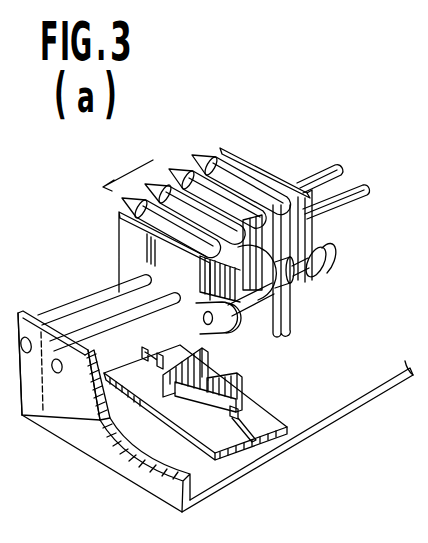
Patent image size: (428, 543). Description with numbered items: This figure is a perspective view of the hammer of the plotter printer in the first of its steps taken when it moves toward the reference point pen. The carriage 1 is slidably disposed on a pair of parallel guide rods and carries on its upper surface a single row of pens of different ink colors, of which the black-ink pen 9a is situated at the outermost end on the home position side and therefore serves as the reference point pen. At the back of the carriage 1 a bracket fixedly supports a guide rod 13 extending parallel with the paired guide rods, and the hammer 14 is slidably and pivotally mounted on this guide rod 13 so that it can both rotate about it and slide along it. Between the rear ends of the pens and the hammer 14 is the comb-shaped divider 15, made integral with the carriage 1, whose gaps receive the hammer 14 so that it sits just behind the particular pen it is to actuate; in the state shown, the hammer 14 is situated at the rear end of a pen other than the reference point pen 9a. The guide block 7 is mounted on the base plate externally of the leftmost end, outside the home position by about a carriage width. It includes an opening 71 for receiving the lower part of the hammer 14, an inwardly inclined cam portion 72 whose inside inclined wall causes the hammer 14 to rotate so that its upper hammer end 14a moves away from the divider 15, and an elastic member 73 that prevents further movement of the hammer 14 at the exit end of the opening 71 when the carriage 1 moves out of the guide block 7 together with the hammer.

The carriage 1 is at (104, 265).
The guide block 7 is at (186, 417).
The black-ink pen 9a is at (158, 193).
The guide rod 13 is at (316, 281).
The hammer 14 is at (286, 306).
The upper hammer end 14a is at (272, 219).
The comb-shaped divider 15 is at (231, 322).
The opening 71 is at (213, 368).
The cam portion 72 is at (189, 392).
The elastic member 73 is at (247, 412).